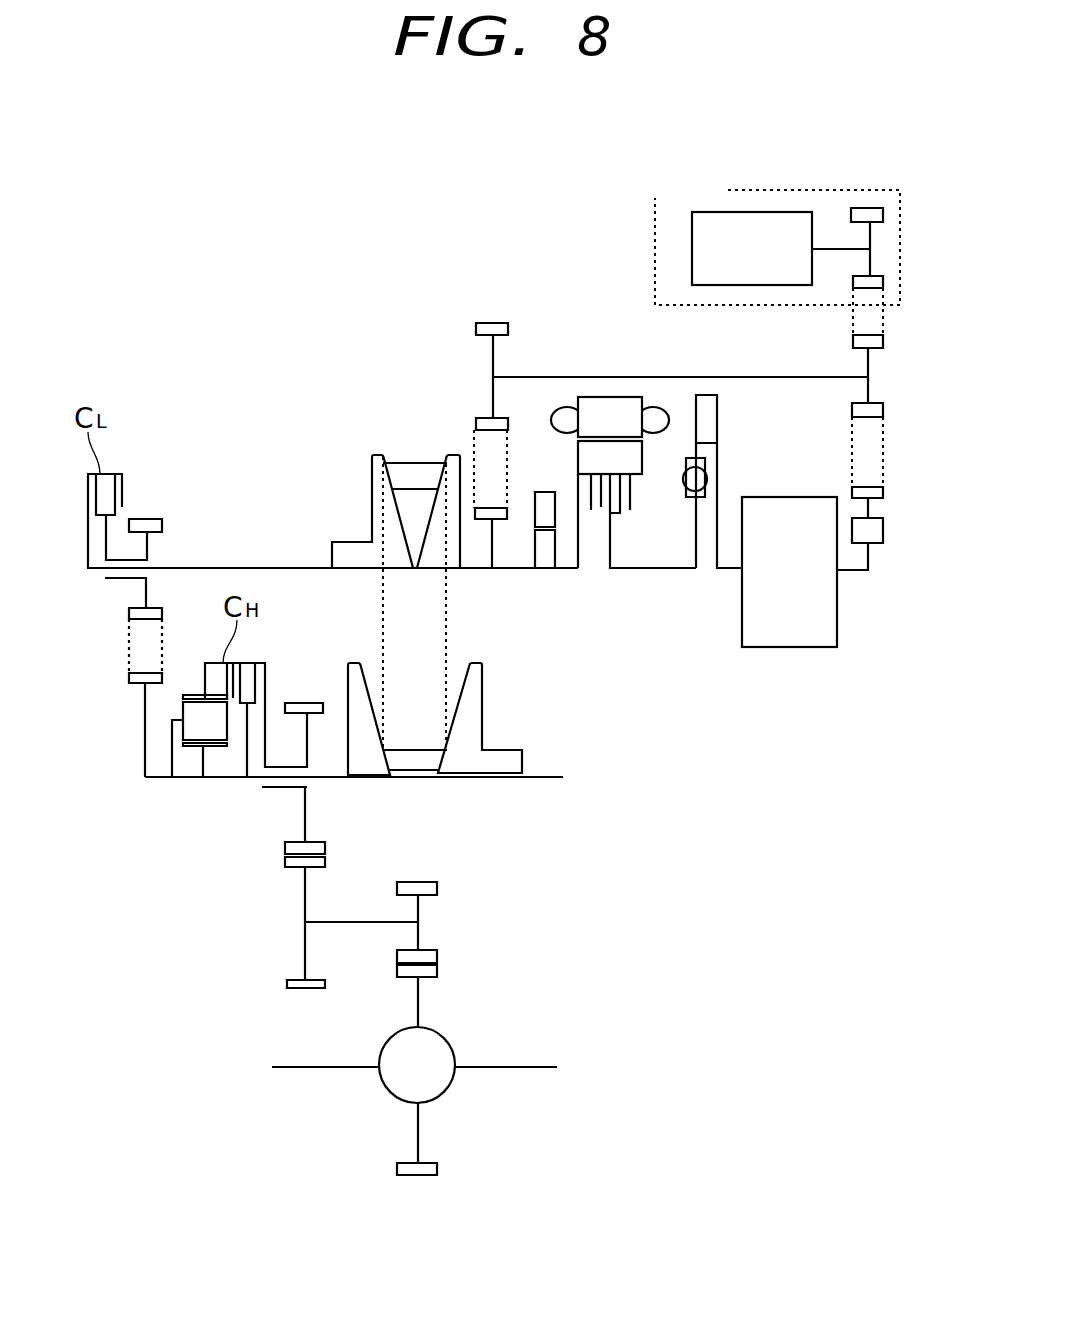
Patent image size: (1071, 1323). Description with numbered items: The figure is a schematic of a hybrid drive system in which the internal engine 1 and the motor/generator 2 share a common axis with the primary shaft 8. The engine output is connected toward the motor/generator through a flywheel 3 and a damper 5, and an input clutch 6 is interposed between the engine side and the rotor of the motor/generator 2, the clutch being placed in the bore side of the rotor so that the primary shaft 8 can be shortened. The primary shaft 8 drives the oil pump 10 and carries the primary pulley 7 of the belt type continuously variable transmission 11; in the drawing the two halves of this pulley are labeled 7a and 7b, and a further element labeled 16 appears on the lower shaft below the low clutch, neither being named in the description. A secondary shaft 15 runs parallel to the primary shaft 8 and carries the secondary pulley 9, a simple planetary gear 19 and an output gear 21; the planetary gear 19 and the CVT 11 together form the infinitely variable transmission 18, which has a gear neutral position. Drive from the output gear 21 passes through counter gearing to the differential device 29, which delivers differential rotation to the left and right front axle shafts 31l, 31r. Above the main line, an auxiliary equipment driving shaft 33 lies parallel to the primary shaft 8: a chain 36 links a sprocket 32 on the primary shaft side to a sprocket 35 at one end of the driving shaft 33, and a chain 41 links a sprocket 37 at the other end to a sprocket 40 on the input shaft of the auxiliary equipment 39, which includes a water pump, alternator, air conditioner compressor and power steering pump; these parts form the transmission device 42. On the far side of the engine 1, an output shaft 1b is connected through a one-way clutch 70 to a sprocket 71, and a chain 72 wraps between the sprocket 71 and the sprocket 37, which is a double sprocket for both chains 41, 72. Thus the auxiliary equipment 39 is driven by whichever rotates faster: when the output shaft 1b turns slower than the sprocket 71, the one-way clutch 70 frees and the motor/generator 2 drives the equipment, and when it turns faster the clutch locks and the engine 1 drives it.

The internal engine 1 is at (800, 493).
The engine output shaft 1b is at (850, 573).
The motor/generator 2 is at (619, 391).
The flywheel 3 is at (719, 413).
The damper 5 is at (710, 480).
The input clutch 6 is at (622, 493).
The primary pulley 7 is at (375, 563).
The movable sheave 7a is at (458, 457).
The fixed sheave 7b is at (372, 460).
The primary shaft 8 is at (295, 565).
The secondary pulley 9 is at (520, 736).
The oil pump 10 is at (545, 488).
The belt type continuously variable transmission 11 is at (381, 391).
The secondary shaft 15 is at (543, 780).
The clutch 16 is at (121, 672).
The infinitely variable transmission 18 is at (208, 420).
The simple planetary gear 19 is at (193, 760).
The output gear 21 is at (310, 703).
The differential device 29 is at (446, 1040).
The front axle shaft 31l is at (293, 1068).
The front axle shaft 31r is at (518, 1070).
The sprocket 32 is at (492, 550).
The auxiliary equipment driving shaft 33 is at (548, 377).
The sprocket 35 is at (493, 350).
The chain 36 is at (475, 447).
The sprocket 37 is at (852, 342).
The auxiliary equipment 39 is at (807, 160).
The sprocket 40 is at (873, 208).
The chain 41 is at (853, 323).
The transmission device 42 is at (550, 308).
The one-way clutch 70 is at (883, 535).
The sprocket 71 is at (883, 492).
The chain 72 is at (883, 437).